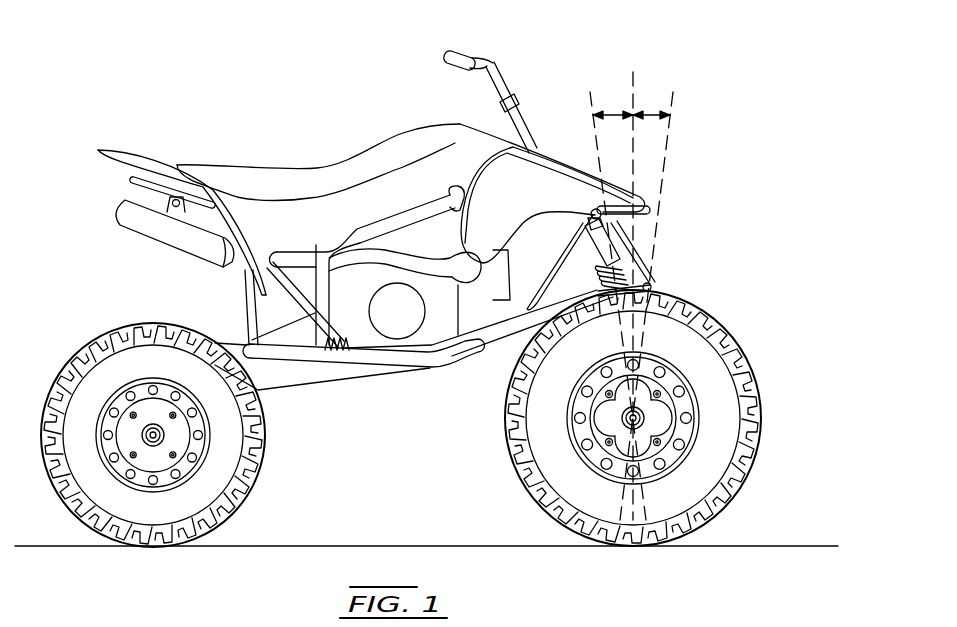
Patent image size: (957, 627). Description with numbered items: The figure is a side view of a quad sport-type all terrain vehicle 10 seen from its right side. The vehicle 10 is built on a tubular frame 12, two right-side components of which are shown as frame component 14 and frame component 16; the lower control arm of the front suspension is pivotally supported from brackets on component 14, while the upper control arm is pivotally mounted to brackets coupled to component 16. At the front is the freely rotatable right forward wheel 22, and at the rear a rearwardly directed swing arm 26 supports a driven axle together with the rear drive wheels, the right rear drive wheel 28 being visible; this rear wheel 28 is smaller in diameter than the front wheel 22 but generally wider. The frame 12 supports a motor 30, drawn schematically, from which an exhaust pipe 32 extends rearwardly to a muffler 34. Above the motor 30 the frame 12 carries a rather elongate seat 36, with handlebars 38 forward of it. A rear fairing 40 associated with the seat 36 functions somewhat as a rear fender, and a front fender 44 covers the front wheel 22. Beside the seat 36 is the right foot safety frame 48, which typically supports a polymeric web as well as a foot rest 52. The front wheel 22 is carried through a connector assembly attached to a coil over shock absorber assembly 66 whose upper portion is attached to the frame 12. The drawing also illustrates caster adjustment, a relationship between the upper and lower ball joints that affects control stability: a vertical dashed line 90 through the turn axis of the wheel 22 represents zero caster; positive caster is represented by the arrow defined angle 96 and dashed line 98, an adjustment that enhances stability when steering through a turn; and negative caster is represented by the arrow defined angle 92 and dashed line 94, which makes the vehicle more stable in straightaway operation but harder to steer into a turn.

The all terrain vehicle 10 is at (788, 92).
The tubular frame 12 is at (497, 383).
The frame component 14 is at (490, 355).
The frame component 16 is at (510, 314).
The right forward wheel 22 is at (748, 366).
The swing arm 26 is at (240, 330).
The right rear drive wheel 28 is at (80, 352).
The motor 30 is at (403, 320).
The exhaust pipe 32 is at (390, 263).
The muffler 34 is at (167, 243).
The seat 36 is at (313, 175).
The handlebars 38 is at (488, 63).
The rear fairing 40 is at (138, 153).
The front fender 44 is at (540, 143).
The right foot safety frame 48 is at (357, 372).
The foot rest 52 is at (335, 350).
The coil over shock absorber assembly 66 is at (618, 260).
The vertical dashed line 90 is at (636, 97).
The arrow defined angle 92 is at (650, 115).
The dashed line 94 is at (663, 177).
The arrow defined angle 96 is at (608, 112).
The dashed line 98 is at (593, 130).